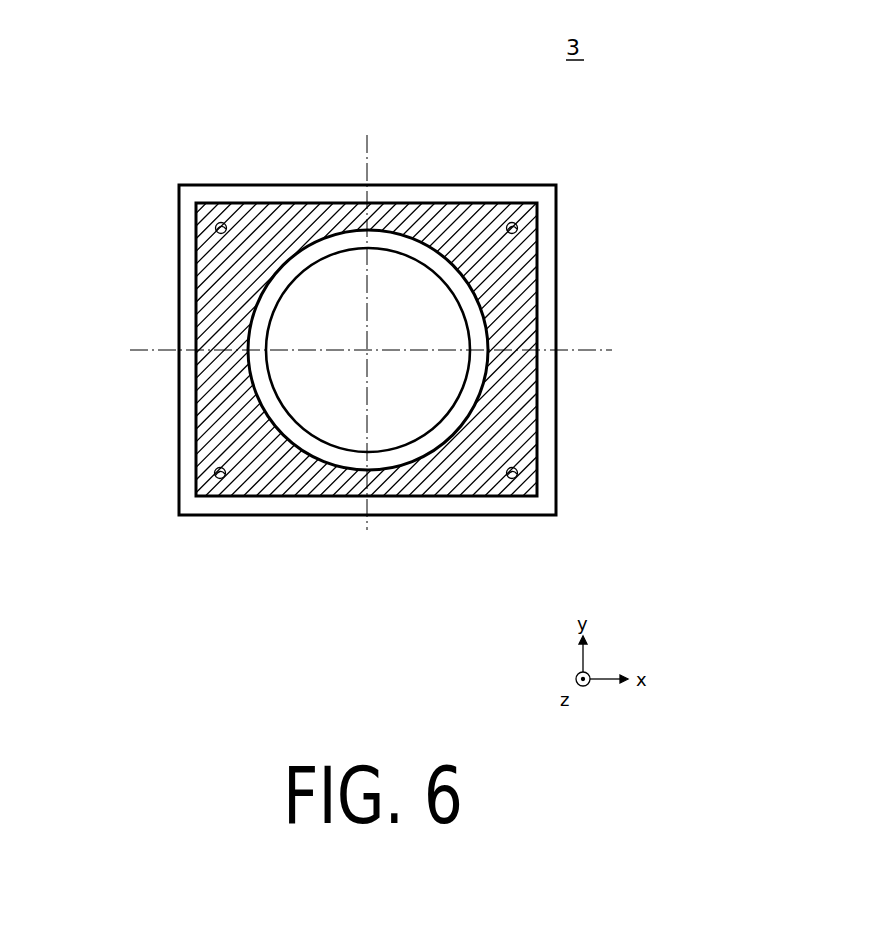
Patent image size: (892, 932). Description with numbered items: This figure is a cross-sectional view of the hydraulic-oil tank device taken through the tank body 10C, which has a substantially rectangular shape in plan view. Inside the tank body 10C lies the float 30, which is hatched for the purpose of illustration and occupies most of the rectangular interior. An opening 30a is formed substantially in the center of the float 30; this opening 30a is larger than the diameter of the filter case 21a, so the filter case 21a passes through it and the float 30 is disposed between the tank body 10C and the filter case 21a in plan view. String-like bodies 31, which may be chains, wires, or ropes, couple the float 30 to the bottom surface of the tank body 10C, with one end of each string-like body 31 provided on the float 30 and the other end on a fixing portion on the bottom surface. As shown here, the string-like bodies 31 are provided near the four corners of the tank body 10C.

The tank body 10C is at (557, 318).
The filter case 21a is at (292, 280).
The float 30 is at (422, 314).
The opening 30a is at (398, 249).
The string-like bodies 31 is at (214, 223).